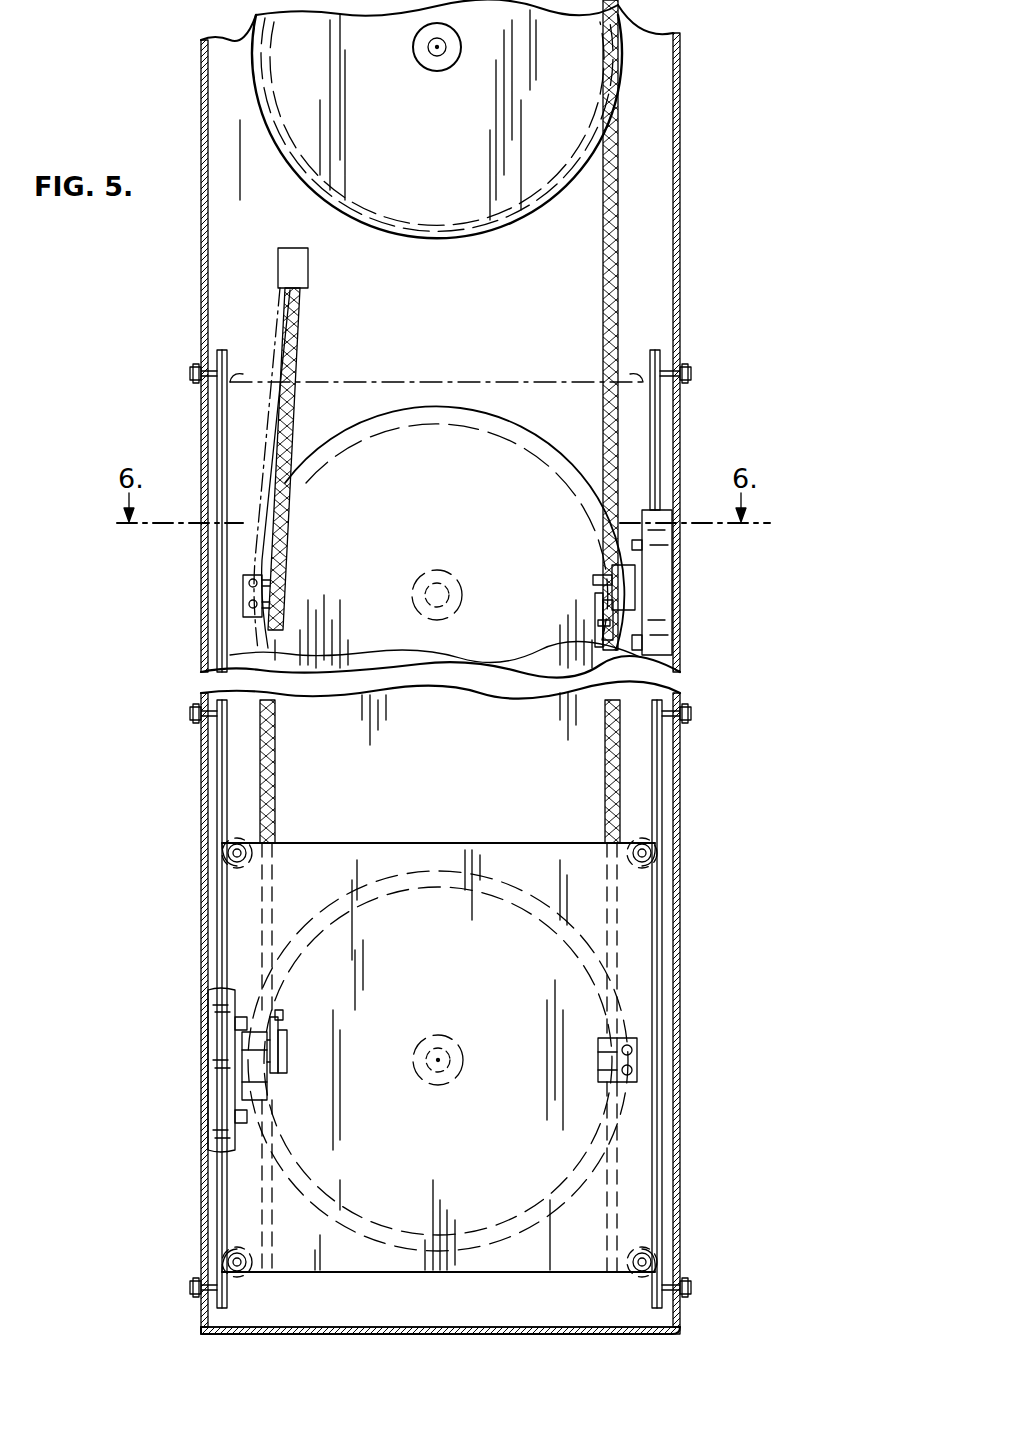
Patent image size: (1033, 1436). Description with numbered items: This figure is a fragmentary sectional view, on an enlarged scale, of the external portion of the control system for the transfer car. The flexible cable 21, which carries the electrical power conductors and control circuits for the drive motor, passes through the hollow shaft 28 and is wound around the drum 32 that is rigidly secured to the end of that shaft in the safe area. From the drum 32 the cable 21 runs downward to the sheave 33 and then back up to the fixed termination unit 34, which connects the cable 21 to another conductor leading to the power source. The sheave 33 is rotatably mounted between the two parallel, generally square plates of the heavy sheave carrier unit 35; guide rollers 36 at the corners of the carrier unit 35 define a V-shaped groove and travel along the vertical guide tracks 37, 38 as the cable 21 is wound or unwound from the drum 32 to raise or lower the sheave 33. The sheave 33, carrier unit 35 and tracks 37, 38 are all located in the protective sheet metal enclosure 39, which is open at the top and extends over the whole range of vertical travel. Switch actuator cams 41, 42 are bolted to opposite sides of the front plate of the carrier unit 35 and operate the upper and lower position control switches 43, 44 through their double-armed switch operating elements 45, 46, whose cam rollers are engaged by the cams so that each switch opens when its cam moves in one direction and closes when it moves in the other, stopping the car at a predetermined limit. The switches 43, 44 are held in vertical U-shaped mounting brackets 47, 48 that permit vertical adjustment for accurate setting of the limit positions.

The flexible cable 21 is at (603, 263).
The hollow shaft 28 is at (447, 52).
The drum 32 is at (443, 240).
The sheave 33 is at (388, 410).
The fixed termination unit 34 is at (308, 270).
The sheave carrier unit 35 is at (478, 381).
The guide rollers 36 is at (228, 852).
The vertical guide track 37 is at (217, 932).
The vertical guide track 38 is at (662, 750).
The protective sheet metal enclosure 39 is at (680, 900).
The switch actuator cam 41 is at (290, 1068).
The switch actuator cam 42 is at (598, 1062).
The upper position control switch 43 is at (252, 1078).
The lower position control switch 44 is at (628, 582).
The switch operating element 45 is at (287, 1057).
The switch operating element 46 is at (598, 612).
The vertical mounting bracket 47 is at (218, 1032).
The vertical mounting bracket 48 is at (660, 618).